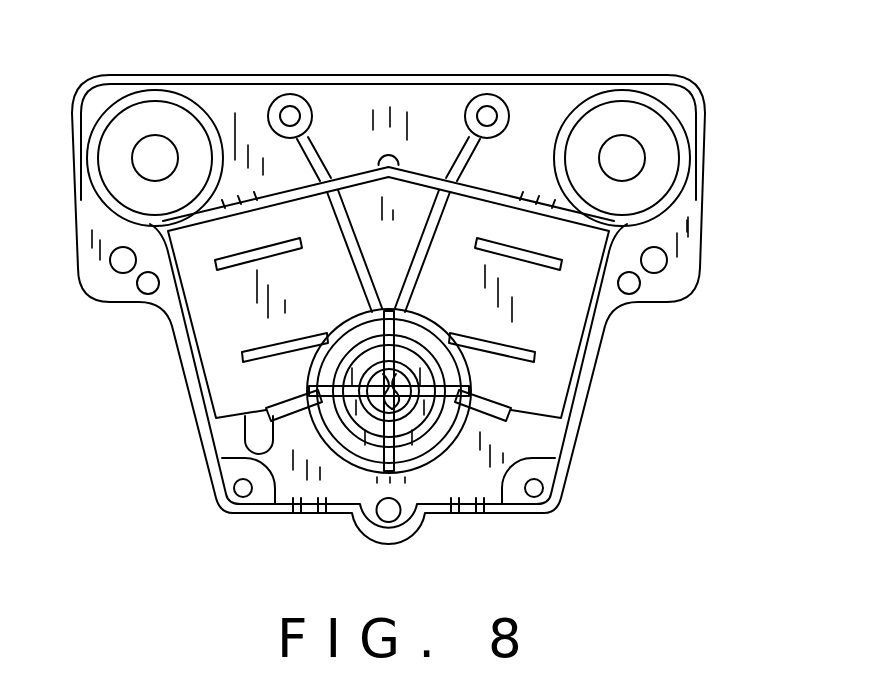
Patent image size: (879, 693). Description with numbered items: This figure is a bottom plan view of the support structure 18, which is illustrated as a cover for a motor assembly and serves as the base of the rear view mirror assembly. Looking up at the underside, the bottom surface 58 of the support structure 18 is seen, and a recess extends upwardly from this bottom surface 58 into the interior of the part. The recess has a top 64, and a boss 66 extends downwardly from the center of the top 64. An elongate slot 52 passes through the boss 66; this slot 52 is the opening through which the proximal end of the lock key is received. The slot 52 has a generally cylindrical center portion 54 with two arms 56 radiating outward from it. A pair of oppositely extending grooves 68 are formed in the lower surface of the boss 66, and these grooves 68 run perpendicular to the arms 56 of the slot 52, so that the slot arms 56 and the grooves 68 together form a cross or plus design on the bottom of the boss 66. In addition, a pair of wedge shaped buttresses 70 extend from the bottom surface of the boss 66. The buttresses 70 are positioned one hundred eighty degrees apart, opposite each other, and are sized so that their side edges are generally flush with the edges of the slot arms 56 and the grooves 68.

The support structure 18 is at (712, 123).
The elongate slot 52 is at (405, 310).
The center portion 54 is at (380, 372).
The arms 56 is at (337, 337).
The bottom surface 58 is at (232, 330).
The top 64 is at (428, 352).
The boss 66 is at (372, 380).
The grooves 68 is at (398, 380).
The buttresses 70 is at (430, 352).